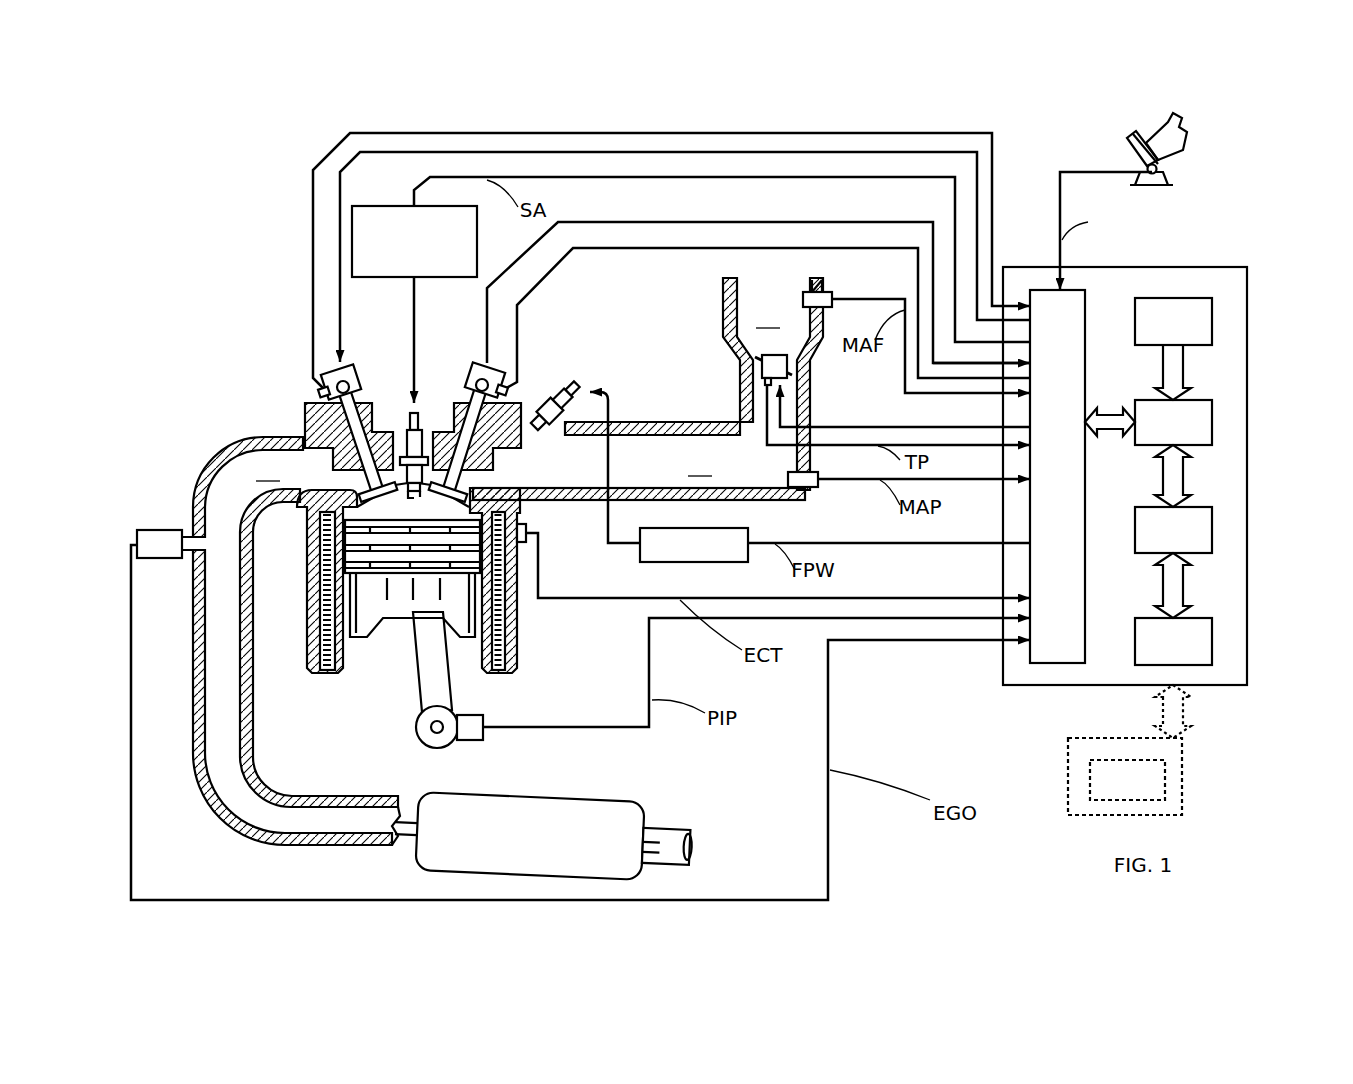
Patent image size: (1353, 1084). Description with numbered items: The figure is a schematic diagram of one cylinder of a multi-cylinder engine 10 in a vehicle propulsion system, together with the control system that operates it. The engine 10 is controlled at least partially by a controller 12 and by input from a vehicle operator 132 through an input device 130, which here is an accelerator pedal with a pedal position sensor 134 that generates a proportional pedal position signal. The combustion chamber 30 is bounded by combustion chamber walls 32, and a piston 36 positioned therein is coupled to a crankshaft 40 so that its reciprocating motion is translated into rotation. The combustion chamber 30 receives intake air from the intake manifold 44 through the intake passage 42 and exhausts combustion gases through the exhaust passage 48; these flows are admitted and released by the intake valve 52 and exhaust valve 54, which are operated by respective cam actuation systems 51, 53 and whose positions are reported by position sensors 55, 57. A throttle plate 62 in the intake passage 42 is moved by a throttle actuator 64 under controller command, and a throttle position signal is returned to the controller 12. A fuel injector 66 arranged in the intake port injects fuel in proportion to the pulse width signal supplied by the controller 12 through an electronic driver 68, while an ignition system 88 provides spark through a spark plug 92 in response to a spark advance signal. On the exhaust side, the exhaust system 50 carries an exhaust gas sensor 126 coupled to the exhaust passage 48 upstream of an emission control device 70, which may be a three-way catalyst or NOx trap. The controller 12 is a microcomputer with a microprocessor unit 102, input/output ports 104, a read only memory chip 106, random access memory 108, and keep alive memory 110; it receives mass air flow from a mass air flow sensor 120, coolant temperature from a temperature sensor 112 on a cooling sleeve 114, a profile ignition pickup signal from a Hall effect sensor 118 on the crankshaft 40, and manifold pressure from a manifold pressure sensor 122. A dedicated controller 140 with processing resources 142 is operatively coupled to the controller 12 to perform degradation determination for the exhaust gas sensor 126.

The engine 10 is at (237, 357).
The controller 12 is at (1240, 267).
The combustion chamber 30 is at (410, 512).
The combustion chamber walls 32 is at (350, 657).
The piston 36 is at (415, 650).
The crankshaft 40 is at (425, 745).
The intake passage 42 is at (767, 317).
The intake manifold 44 is at (648, 389).
The exhaust passage 48 is at (296, 641).
The exhaust system 50 is at (175, 465).
The cam actuation system 51 is at (478, 372).
The intake valve 52 is at (465, 489).
The cam actuation system 53 is at (348, 372).
The exhaust valve 54 is at (355, 492).
The position sensor 55 is at (505, 390).
The position sensor 57 is at (322, 390).
The throttle plate 62 is at (790, 370).
The throttle actuator 64 is at (760, 365).
The fuel injector 66 is at (560, 405).
The electronic driver 68 is at (652, 562).
The emission control device 70 is at (600, 795).
The ignition system 88 is at (368, 206).
The spark plug 92 is at (420, 425).
The microprocessor unit 102 is at (1212, 422).
The input/output ports 104 is at (1087, 305).
The read only memory chip 106 is at (1212, 320).
The random access memory 108 is at (1212, 530).
The keep alive memory 110 is at (1212, 640).
The temperature sensor 112 is at (530, 537).
The cooling sleeve 114 is at (505, 640).
The Hall effect sensor 118 is at (470, 742).
The mass air flow sensor 120 is at (820, 290).
The manifold pressure sensor 122 is at (815, 487).
The exhaust gas sensor 126 is at (137, 533).
The input device 130 is at (1137, 150).
The vehicle operator 132 is at (1188, 132).
The pedal position sensor 134 is at (1165, 172).
The dedicated controller 140 is at (1182, 748).
The processing resources 142 is at (1165, 780).